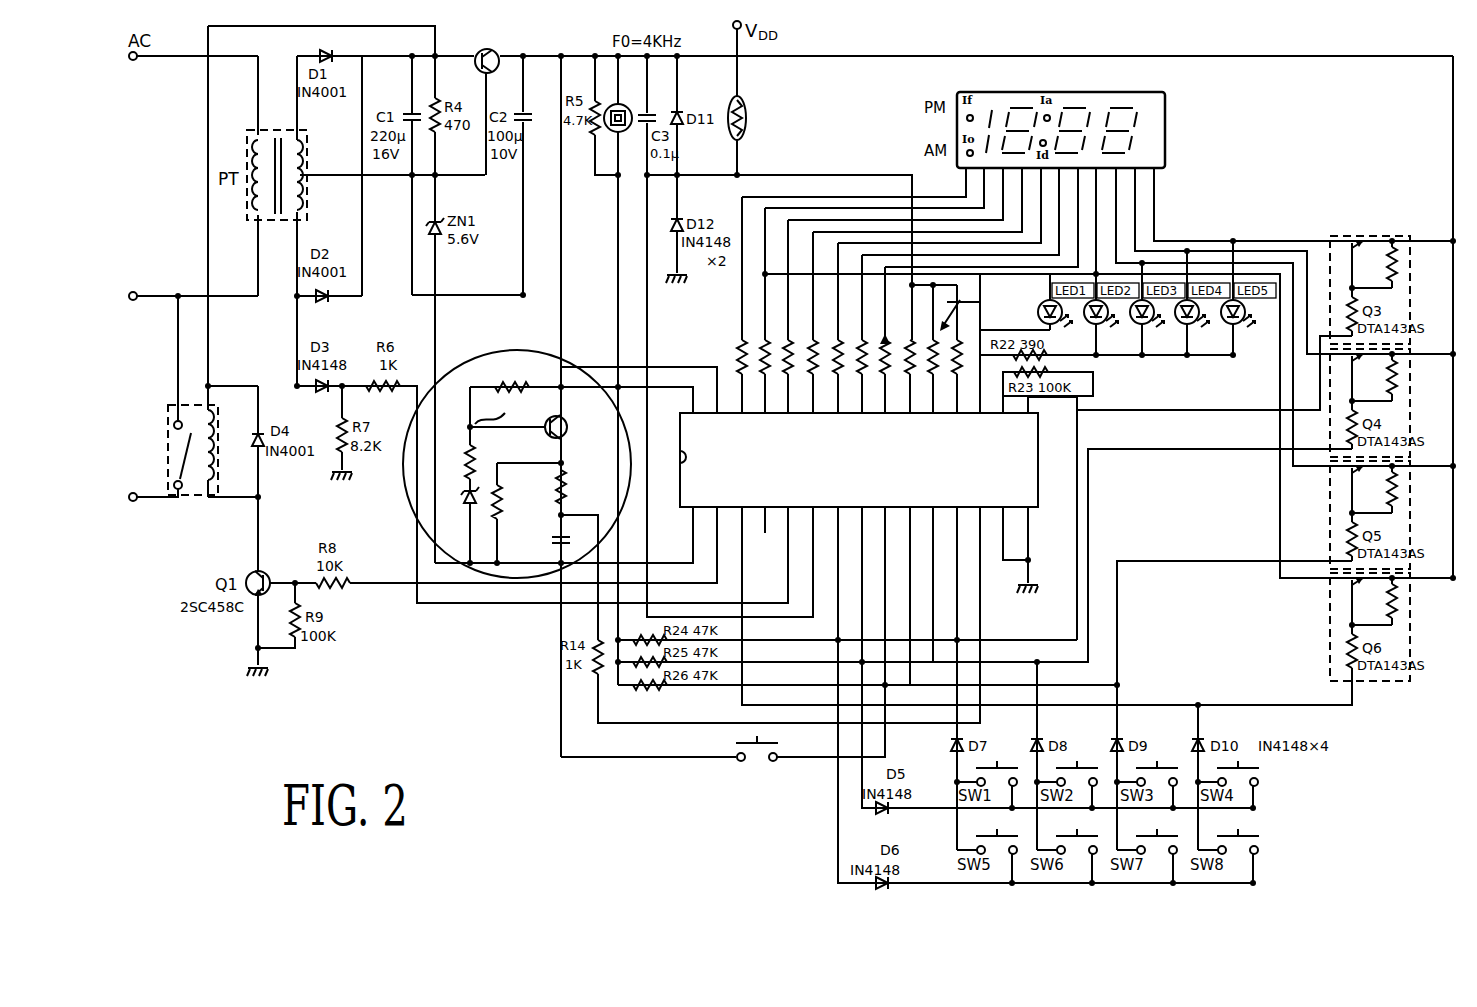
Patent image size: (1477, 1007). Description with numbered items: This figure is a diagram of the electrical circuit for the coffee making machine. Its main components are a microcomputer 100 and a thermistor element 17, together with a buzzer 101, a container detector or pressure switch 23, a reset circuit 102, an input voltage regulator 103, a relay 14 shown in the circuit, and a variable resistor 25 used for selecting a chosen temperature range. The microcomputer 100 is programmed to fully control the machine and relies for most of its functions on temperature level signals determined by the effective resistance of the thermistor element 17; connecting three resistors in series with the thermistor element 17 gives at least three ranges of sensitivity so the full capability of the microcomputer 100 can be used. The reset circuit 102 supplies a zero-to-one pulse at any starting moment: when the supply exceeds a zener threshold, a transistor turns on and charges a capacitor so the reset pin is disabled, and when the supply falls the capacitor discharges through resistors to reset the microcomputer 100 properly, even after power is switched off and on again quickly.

The relay RY1 14 is at (193, 503).
The thermistor element 17 is at (746, 102).
The container detector or pressure switch 23 is at (738, 763).
The variable resistor 25 is at (980, 303).
The microcomputer 100 is at (1024, 466).
The buzzer 101 is at (628, 133).
The reset circuit 102 is at (406, 501).
The input voltage regulator 103 is at (501, 69).